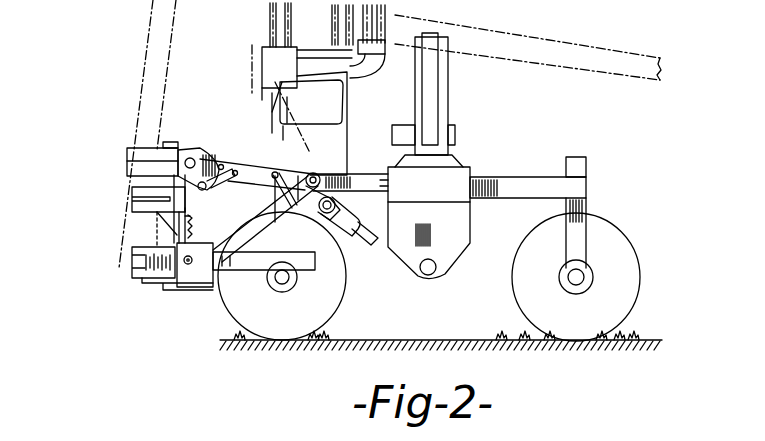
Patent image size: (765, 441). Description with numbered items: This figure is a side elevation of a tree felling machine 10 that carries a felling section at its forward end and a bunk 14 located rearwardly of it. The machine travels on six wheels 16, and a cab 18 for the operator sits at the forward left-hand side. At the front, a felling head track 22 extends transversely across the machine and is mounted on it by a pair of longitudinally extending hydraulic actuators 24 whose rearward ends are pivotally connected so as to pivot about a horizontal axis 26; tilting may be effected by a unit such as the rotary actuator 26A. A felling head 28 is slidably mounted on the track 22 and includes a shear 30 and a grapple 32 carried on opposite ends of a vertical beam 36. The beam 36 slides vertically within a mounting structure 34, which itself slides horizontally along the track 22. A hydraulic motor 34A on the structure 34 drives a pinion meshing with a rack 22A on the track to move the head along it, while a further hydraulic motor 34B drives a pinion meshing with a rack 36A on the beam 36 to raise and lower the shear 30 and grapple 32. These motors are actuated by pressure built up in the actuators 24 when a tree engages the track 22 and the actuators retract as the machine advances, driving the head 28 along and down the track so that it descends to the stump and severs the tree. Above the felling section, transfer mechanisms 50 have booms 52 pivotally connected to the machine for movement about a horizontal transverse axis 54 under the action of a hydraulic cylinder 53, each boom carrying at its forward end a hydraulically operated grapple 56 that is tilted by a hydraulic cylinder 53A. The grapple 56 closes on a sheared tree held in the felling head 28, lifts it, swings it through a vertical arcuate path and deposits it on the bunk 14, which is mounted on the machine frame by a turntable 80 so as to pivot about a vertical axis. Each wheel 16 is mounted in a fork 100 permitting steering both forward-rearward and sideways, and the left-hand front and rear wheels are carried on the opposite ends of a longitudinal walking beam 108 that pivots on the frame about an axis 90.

The tree felling machine 10 is at (617, 157).
The bunk 14 is at (445, 128).
The wheels 16 is at (320, 306).
The cab 18 is at (342, 133).
The felling head track 22 is at (132, 258).
The rack 22A is at (160, 259).
The hydraulic actuators 24 is at (235, 266).
The horizontal axis 26 is at (370, 235).
The rotary actuator 26A is at (276, 219).
The felling head 28 is at (188, 212).
The shear 30 is at (152, 283).
The grapple 32 is at (132, 202).
The mounting structure 34 is at (212, 247).
The hydraulic motor 34A is at (189, 266).
The hydraulic motor 34B is at (187, 240).
The vertical beam 36 is at (206, 190).
The rack 36A is at (187, 221).
The transfer mechanisms 50 is at (213, 156).
The booms 52 is at (236, 168).
The hydraulic cylinder 53 is at (295, 146).
The hydraulic cylinder 53A is at (222, 165).
The horizontal transverse axis 54 is at (320, 174).
The grapple 56 is at (127, 166).
The turntable 80 is at (452, 165).
The axis 90 is at (438, 267).
The fork 100 is at (588, 207).
The longitudinal walking beam 108 is at (515, 183).